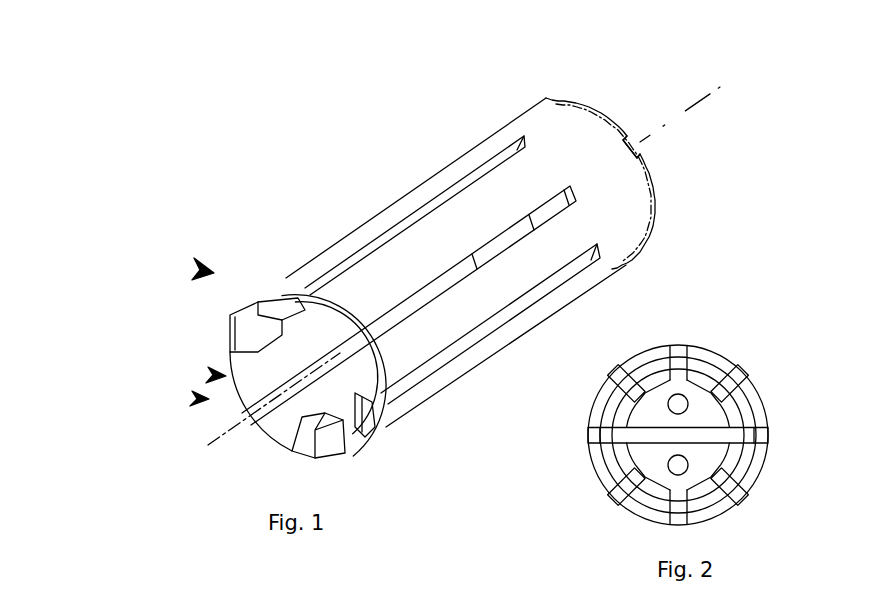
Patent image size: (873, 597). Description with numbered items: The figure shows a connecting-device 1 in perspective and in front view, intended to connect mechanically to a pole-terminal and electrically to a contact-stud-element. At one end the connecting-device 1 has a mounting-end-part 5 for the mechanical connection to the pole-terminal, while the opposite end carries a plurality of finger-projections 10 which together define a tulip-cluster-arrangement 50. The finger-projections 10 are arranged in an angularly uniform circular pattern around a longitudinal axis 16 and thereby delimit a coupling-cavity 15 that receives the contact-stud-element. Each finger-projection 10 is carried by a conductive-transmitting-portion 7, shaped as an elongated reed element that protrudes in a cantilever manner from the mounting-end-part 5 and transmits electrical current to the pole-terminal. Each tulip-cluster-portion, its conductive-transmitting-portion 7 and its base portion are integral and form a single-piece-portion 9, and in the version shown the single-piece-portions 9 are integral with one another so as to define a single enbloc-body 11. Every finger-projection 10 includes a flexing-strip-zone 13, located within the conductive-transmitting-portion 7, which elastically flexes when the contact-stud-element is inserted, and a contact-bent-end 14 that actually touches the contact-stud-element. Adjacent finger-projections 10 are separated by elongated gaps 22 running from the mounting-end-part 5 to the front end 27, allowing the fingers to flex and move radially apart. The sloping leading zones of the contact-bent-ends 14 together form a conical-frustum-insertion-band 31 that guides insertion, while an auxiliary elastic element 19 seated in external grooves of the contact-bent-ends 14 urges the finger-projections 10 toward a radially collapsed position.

In FIG. 1, the connecting-device 1 is at (350, 240).
In FIG. 1, the mounting-end-part 5 is at (660, 193).
In FIG. 1, the conductive-transmitting-portion 7 is at (438, 230).
In FIG. 1, the single-piece-portion 9 is at (545, 163).
In FIG. 1, the finger-projection 10 is at (300, 280).
In FIG. 2, the finger-projection 10 is at (707, 373).
In FIG. 1, the enbloc-body 11 is at (200, 270).
In FIG. 1, the flexing-strip-zone 13 is at (443, 327).
In FIG. 1, the contact-bent-end 14 is at (312, 457).
In FIG. 2, the coupling-cavity 15 is at (636, 470).
In FIG. 1, the longitudinal axis 16 is at (200, 453).
In FIG. 1, the auxiliary elastic element 19 is at (382, 398).
In FIG. 1, the elongated gap 22 is at (478, 180).
In FIG. 1, the front end 27 is at (196, 398).
In FIG. 1, the conical-frustum-insertion-band 31 is at (240, 343).
In FIG. 1, the tulip-cluster-arrangement 50 is at (215, 374).